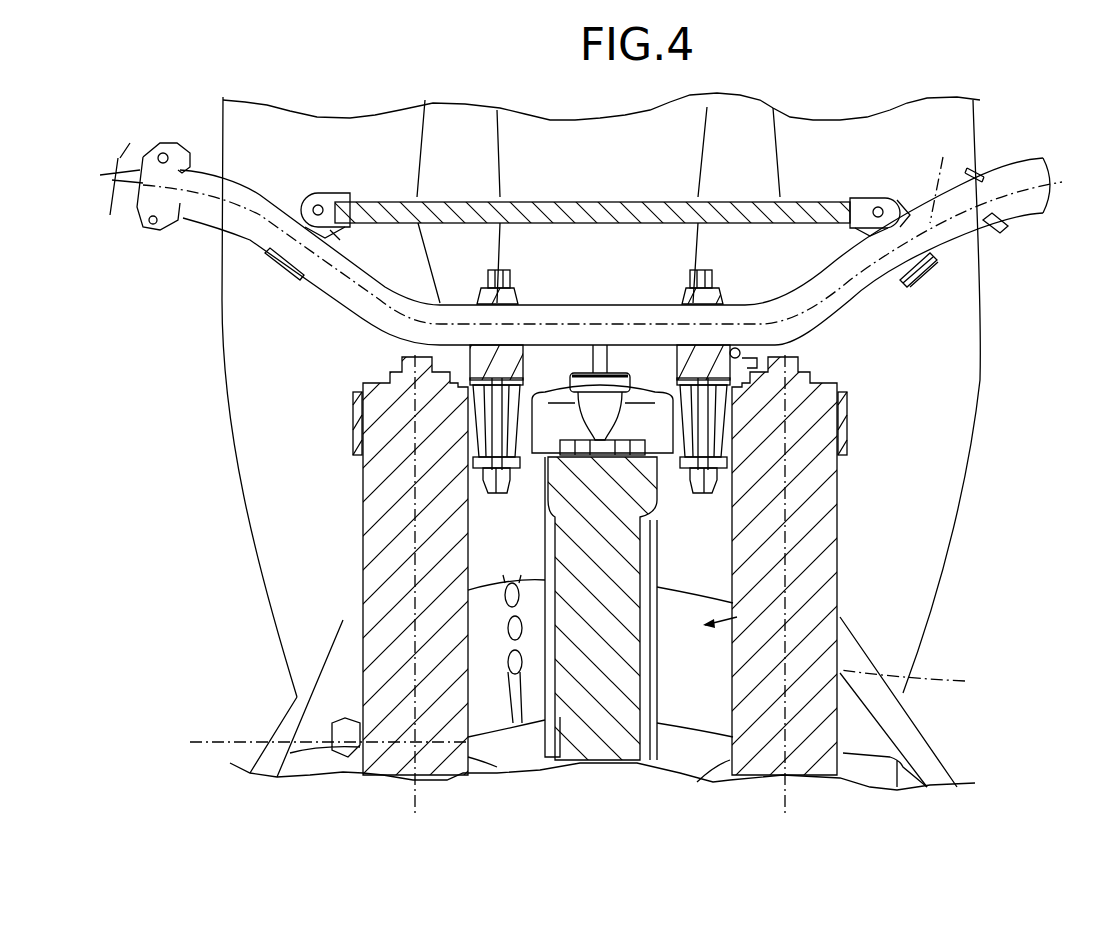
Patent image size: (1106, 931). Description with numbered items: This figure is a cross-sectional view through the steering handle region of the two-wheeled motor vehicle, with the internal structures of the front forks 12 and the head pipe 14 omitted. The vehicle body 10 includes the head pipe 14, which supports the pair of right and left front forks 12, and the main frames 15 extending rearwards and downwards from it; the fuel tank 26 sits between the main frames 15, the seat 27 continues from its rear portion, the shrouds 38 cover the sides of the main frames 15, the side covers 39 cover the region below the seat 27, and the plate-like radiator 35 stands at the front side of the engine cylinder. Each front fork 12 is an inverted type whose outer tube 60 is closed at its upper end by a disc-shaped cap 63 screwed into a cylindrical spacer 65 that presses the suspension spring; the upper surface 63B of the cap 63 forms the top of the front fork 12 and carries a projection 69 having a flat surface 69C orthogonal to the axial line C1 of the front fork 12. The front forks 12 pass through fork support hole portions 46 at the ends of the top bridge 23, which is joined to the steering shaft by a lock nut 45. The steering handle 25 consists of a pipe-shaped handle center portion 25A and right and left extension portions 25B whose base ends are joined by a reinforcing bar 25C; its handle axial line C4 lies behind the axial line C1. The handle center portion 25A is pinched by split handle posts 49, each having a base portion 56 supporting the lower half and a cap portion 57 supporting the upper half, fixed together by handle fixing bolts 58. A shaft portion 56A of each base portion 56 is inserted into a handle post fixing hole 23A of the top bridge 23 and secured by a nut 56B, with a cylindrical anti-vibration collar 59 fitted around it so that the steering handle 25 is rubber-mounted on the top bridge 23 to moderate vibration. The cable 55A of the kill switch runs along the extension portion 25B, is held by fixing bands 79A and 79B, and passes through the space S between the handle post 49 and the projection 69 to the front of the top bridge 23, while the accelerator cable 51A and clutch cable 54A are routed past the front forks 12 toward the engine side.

The vehicle body 10 is at (840, 607).
The front fork 12 is at (348, 555).
The head pipe 14 is at (840, 540).
The main frame 15 is at (497, 662).
The top bridge 23 is at (545, 380).
The handle post fixing hole 23A is at (533, 400).
The steering handle 25 is at (284, 200).
The handle center portion 25A is at (597, 305).
The extension portion 25B is at (203, 220).
The reinforcing bar 25C is at (398, 200).
The fuel tank 26 is at (490, 515).
The seat 27 is at (687, 150).
The radiator 35 is at (310, 763).
The shroud 38 is at (287, 718).
The side cover 39 is at (238, 350).
The lock nut 45 is at (617, 372).
The fork support hole portion 46 is at (353, 417).
The handle post 49 is at (475, 283).
The accelerator cable 51A is at (505, 610).
The clutch cable 54A is at (337, 723).
The cable 55A is at (957, 247).
The base portion 56 is at (522, 373).
The shaft portion 56A is at (475, 425).
The nut 56B is at (503, 495).
The cap portion 57 is at (526, 285).
The handle fixing bolt 58 is at (510, 273).
The anti-vibration collar 59 is at (478, 440).
The outer tube 60 is at (360, 588).
The cap 63 is at (372, 382).
The upper surface 63B is at (443, 367).
The cylindrical spacer 65 is at (360, 386).
The projection 69 is at (380, 372).
The flat surface 69C is at (381, 355).
The fixing band 79A is at (742, 352).
The fixing band 79B is at (978, 175).
The axial line C1 is at (579, 709).
The handle axial line C4 is at (945, 171).
The space S is at (735, 348).